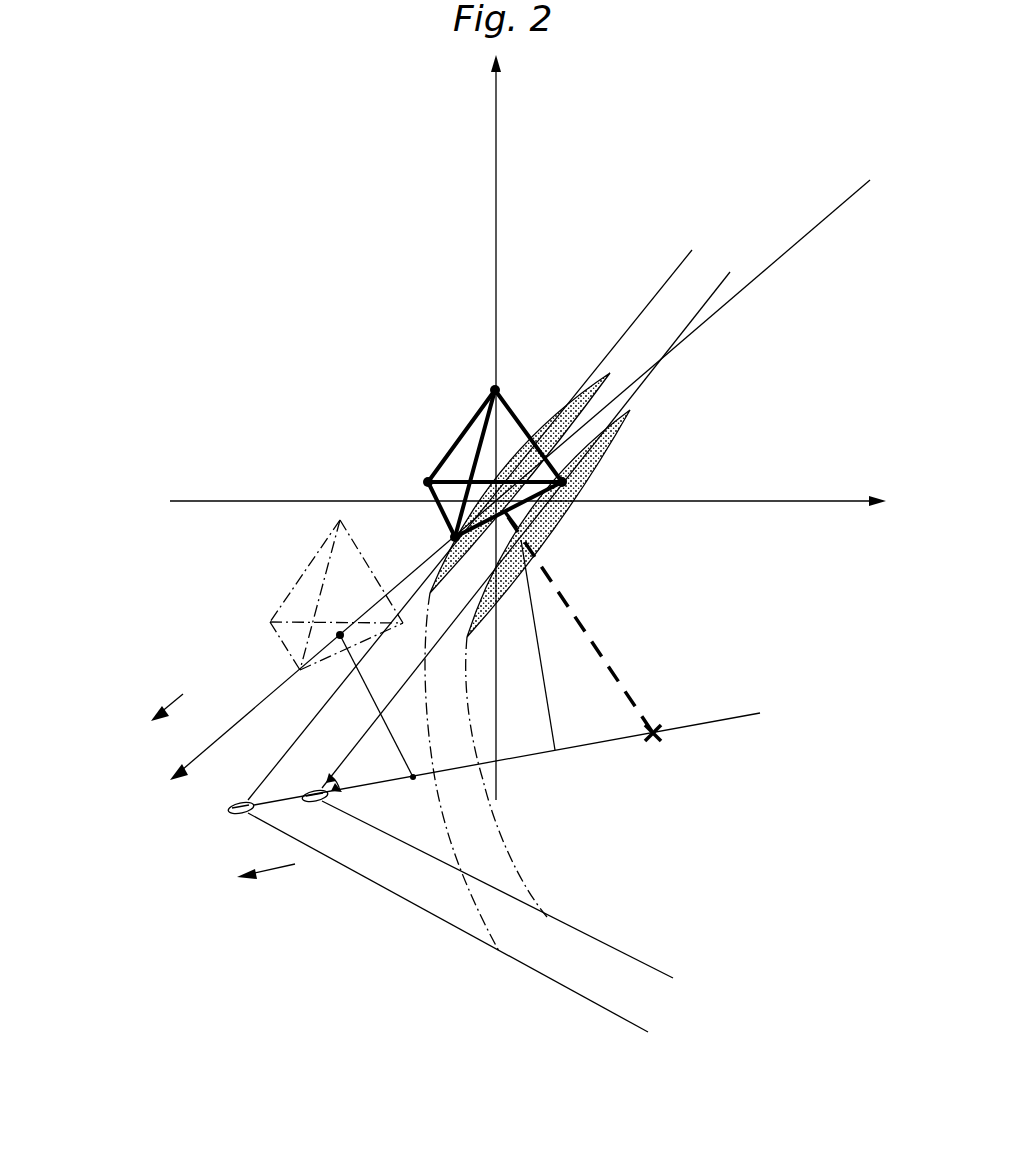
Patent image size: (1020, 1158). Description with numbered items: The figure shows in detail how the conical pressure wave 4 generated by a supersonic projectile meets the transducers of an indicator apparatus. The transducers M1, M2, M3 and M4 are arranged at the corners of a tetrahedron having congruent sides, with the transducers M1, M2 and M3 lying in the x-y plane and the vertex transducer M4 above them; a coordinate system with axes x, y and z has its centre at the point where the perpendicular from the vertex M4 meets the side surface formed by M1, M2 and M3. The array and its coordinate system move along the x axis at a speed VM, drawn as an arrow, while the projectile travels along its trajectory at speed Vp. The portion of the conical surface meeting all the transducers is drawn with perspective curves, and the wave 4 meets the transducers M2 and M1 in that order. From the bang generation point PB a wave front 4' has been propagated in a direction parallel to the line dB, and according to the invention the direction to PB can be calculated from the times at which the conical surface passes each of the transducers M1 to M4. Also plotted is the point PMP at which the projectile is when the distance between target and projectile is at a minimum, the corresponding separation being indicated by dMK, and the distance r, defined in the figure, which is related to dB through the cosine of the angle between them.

The pressure wave 4 is at (497, 889).
The wave front 4' is at (448, 922).
The transducer M1 is at (375, 613).
The transducer M2 is at (590, 478).
The transducer M3 is at (330, 553).
The transducer M4 is at (439, 446).
The bang generation point PB is at (661, 717).
The point of minimum distance PMP is at (423, 793).
The distance to bang generation point dB is at (594, 642).
The distance from array to projectile trajectory dMK is at (396, 744).
The distance r is at (544, 706).
The speed of transducer array VM is at (155, 721).
The projectile speed Vp is at (266, 884).
The x axis x is at (508, 491).
The y axis y is at (529, 489).
The z axis z is at (505, 423).